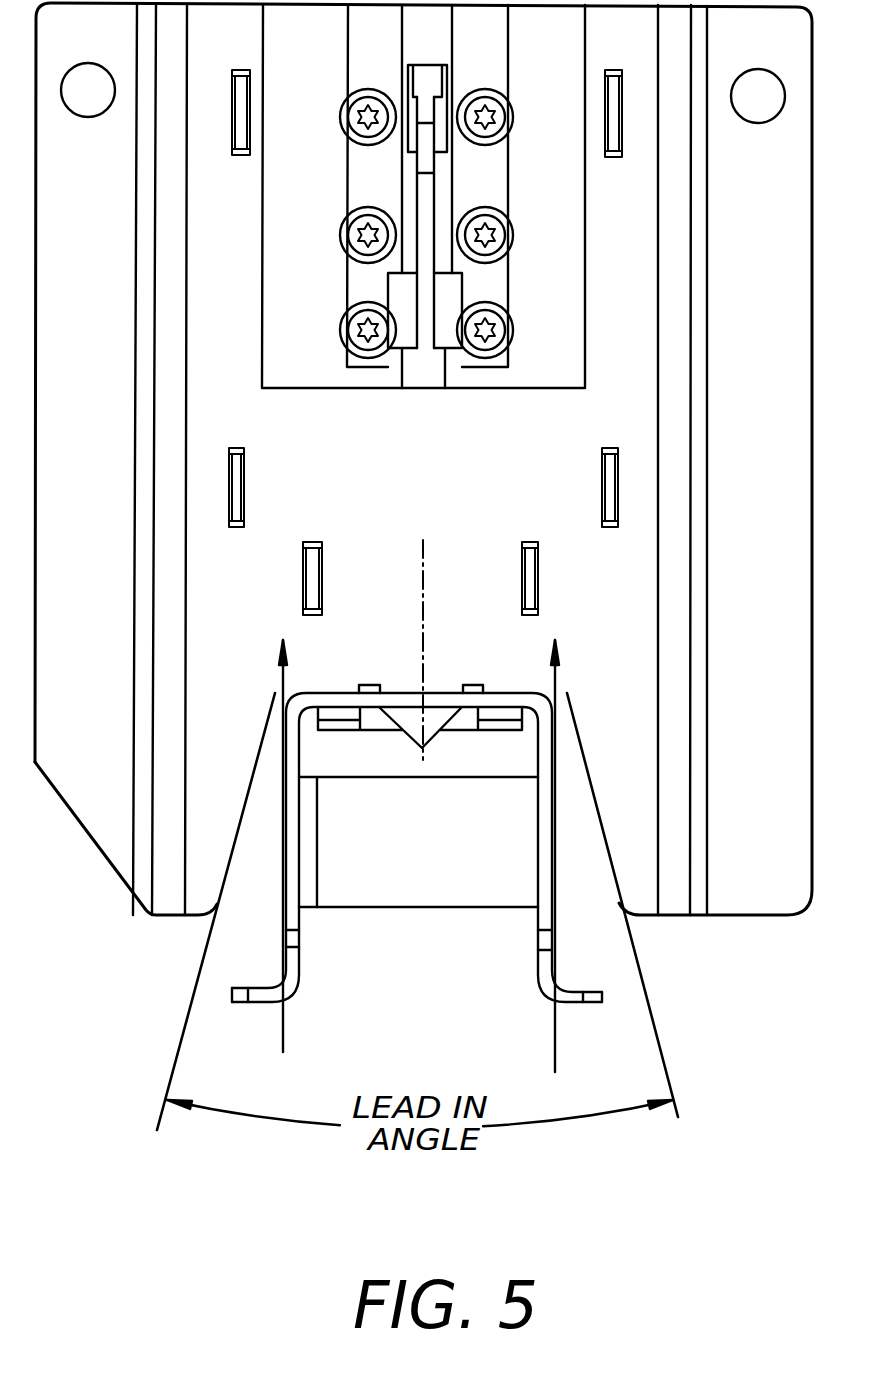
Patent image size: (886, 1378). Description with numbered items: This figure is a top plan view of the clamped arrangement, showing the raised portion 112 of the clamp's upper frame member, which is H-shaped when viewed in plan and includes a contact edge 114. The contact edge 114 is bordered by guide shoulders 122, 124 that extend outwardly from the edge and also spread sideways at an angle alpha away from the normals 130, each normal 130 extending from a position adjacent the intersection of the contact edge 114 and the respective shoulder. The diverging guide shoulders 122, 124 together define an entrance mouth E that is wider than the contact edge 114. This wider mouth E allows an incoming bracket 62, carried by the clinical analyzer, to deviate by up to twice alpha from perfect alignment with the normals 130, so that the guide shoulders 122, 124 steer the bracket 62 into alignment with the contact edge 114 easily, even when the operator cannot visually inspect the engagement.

The portion 112 is at (440, 455).
The contact edge 114 is at (559, 699).
The guide shoulder 122 is at (235, 858).
The guide shoulder 124 is at (580, 785).
The normal 130 is at (283, 1040).
The bracket 62 is at (422, 908).
The entrance mouth E is at (605, 912).